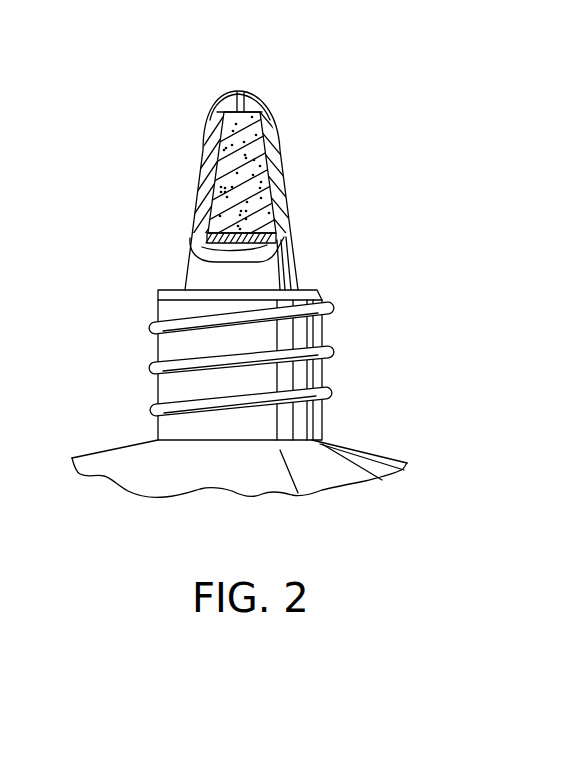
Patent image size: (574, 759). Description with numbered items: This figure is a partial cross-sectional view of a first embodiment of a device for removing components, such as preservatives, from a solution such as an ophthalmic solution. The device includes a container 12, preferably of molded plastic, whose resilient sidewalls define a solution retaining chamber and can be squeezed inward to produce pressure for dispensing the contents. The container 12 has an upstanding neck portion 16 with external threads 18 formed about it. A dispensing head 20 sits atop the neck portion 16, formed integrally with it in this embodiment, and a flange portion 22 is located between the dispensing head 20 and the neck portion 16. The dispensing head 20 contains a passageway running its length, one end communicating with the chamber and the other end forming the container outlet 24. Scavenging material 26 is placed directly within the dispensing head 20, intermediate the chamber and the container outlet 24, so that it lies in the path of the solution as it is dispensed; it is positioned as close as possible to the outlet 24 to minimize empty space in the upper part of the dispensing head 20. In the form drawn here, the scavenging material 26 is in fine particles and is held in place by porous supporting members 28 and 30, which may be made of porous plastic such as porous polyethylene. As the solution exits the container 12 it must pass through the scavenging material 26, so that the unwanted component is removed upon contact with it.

The container 12 is at (367, 438).
The neck portion 16 is at (158, 306).
The external threads 18 is at (330, 349).
The dispensing head 20 is at (281, 155).
The flange portion 22 is at (310, 291).
The container outlet 24 is at (240, 92).
The scavenging material 26 is at (273, 215).
The porous supporting member 28 is at (260, 110).
The porous supporting member 30 is at (192, 259).